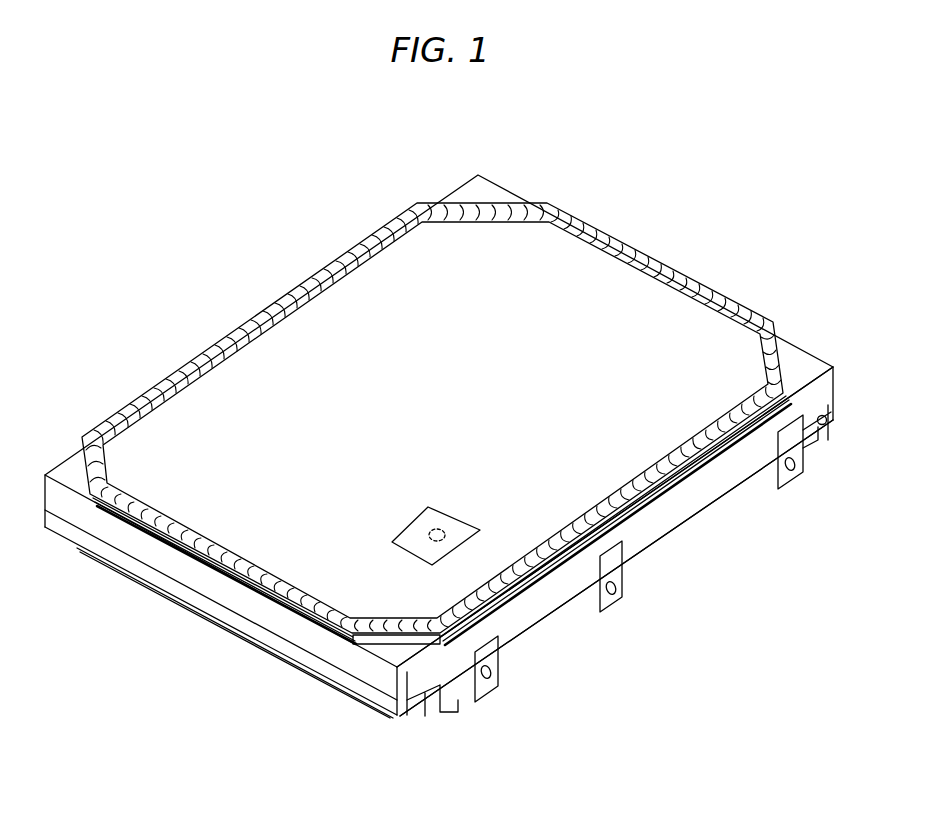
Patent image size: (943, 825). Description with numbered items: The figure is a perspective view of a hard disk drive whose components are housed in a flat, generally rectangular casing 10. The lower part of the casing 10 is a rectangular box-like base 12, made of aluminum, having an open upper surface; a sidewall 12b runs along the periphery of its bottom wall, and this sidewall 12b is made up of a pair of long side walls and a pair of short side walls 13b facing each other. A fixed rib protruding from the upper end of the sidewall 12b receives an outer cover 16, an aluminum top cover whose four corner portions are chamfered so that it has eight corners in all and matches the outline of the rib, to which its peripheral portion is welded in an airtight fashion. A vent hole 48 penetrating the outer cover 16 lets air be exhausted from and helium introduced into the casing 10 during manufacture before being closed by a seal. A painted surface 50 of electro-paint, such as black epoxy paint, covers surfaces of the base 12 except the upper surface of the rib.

The casing 10 is at (268, 255).
The base 12 is at (668, 545).
The sidewall 12b is at (545, 637).
The short side wall 13b is at (280, 645).
The outer cover 16 is at (600, 278).
The vent hole 48 is at (430, 545).
The painted surface 50 is at (450, 516).